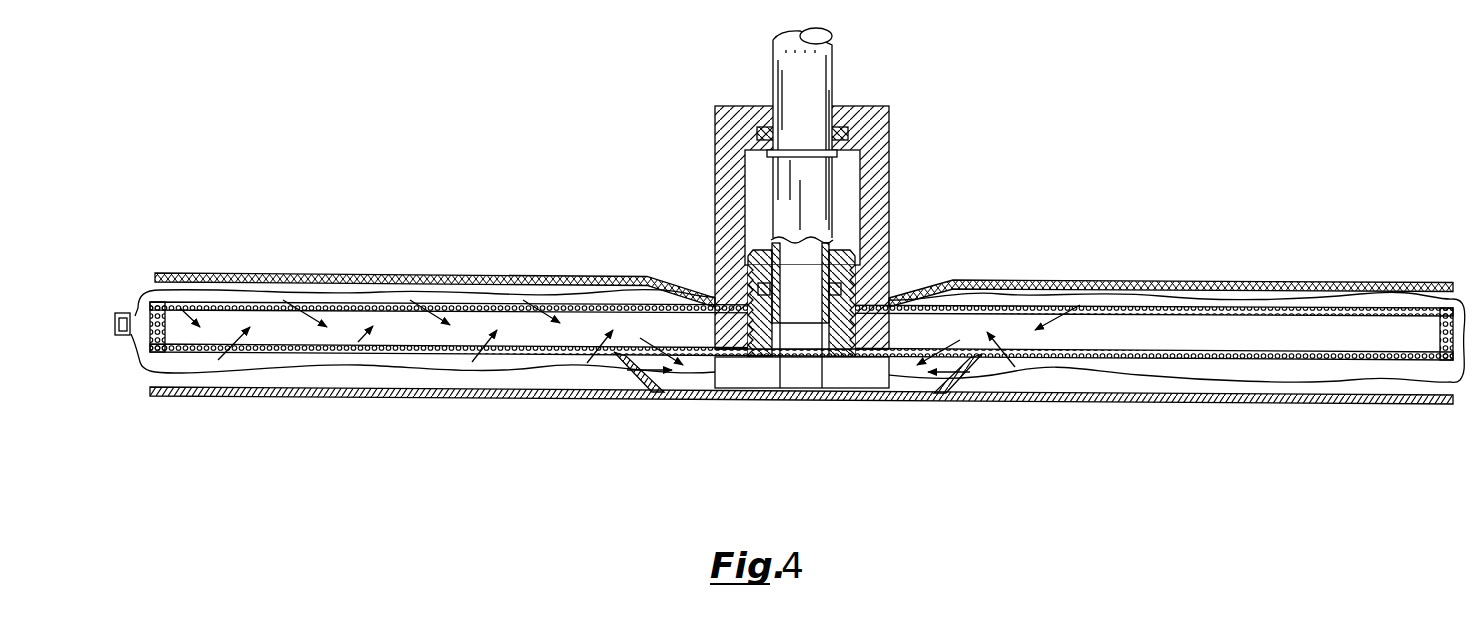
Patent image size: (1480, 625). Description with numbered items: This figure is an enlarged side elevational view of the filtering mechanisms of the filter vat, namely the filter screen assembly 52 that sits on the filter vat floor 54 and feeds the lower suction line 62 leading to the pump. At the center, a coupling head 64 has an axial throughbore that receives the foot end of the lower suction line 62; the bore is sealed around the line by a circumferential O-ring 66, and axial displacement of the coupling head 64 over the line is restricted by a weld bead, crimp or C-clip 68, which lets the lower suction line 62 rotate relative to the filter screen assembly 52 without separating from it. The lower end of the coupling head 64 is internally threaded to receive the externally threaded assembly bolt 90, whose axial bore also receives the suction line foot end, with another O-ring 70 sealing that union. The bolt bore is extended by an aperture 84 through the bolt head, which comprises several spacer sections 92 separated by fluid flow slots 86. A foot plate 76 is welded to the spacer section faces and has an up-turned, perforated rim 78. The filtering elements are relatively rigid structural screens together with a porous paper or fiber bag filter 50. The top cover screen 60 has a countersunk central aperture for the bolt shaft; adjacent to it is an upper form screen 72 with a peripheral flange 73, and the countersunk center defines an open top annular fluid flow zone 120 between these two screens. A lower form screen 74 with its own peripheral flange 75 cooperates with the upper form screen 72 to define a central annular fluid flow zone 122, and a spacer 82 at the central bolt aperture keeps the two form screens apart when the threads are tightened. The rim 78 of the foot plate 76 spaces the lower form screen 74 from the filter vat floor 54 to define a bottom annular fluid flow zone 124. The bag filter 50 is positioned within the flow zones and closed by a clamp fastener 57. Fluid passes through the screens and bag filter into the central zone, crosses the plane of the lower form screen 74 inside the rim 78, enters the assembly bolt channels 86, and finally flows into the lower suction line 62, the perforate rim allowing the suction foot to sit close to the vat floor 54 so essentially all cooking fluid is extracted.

The bag filter 50 is at (223, 373).
The filter screen assembly 52 is at (601, 246).
The filter vat floor 54 is at (386, 397).
The clamp fastener 57 is at (123, 336).
The top cover screen 60 is at (337, 274).
The lower suction line 62 is at (827, 72).
The coupling head 64 is at (889, 118).
The O-ring 66 is at (757, 134).
The bead 68 is at (835, 155).
The O-ring 70 is at (752, 298).
The upper form screen 72 is at (245, 304).
The peripheral flange 73 is at (177, 309).
The lower form screen 74 is at (327, 353).
The peripheral flange 75 is at (133, 318).
The foot plate 76 is at (672, 397).
The rim 78 is at (643, 388).
The spacer 82 is at (713, 337).
The aperture 84 is at (795, 352).
The fluid flow slots 86 is at (808, 380).
The assembly bolt 90 is at (830, 352).
The spacer sections 92 is at (725, 378).
The top annular fluid flow zone 120 is at (1160, 297).
The central annular fluid flow zone 122 is at (428, 344).
The bottom annular fluid flow zone 124 is at (1247, 384).